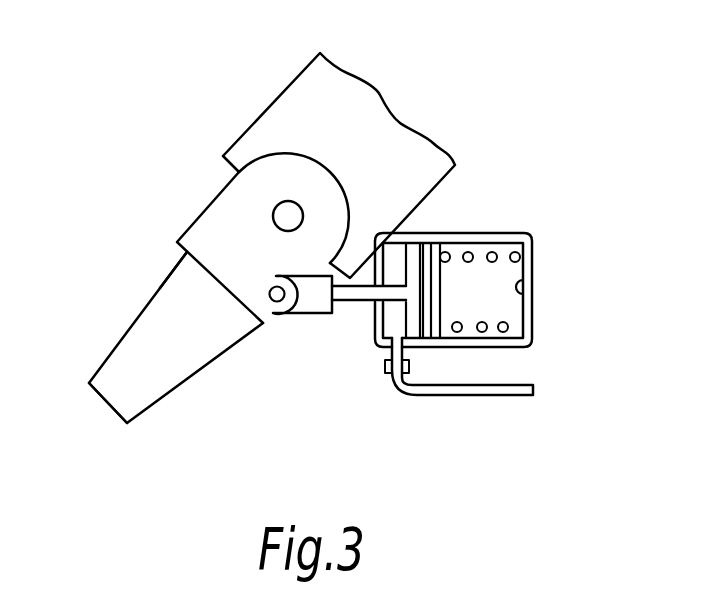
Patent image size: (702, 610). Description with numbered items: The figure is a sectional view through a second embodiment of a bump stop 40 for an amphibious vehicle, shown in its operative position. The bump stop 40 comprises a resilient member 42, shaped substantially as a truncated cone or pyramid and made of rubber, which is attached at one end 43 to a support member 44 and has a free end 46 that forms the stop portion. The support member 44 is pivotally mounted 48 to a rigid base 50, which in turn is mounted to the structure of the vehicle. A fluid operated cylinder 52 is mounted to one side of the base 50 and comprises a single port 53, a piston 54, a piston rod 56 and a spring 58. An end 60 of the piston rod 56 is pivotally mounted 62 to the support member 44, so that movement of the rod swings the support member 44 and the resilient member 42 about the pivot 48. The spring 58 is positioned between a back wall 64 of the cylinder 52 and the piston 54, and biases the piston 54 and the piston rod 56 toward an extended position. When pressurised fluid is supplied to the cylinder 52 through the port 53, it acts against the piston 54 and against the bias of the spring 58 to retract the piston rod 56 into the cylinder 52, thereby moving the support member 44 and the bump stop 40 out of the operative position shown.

The bump stop 40 is at (196, 120).
The resilient member 42 is at (145, 383).
The one end 43 is at (210, 277).
The support member 44 is at (218, 230).
The free end 46 is at (107, 407).
The pivotal mounting 48 is at (289, 216).
The rigid base 50 is at (300, 108).
The fluid operated cylinder 52 is at (470, 232).
The port 53 is at (397, 386).
The piston 54 is at (425, 338).
The piston rod 56 is at (360, 295).
The spring 58 is at (507, 327).
The end of the piston rod 60 is at (307, 299).
The pivotal mounting 62 is at (274, 304).
The back wall 64 is at (518, 283).